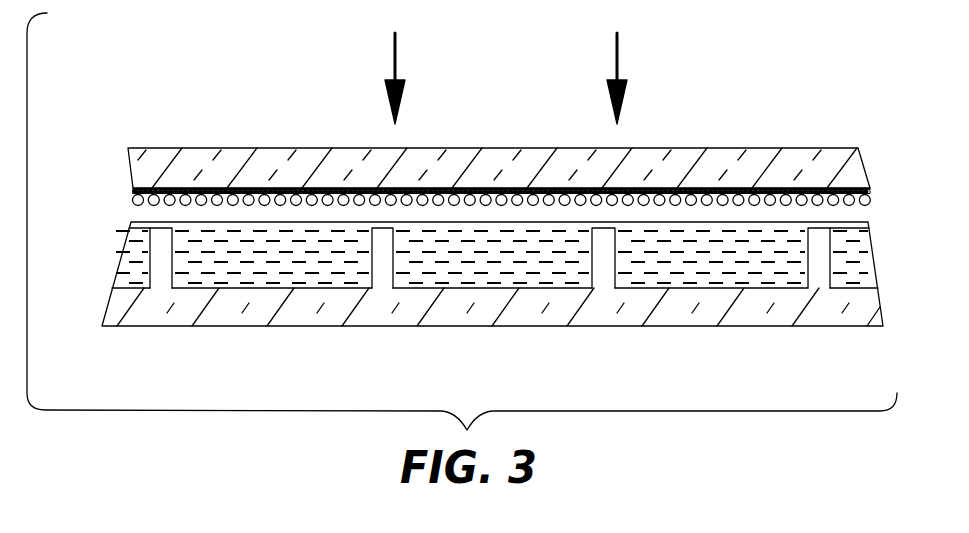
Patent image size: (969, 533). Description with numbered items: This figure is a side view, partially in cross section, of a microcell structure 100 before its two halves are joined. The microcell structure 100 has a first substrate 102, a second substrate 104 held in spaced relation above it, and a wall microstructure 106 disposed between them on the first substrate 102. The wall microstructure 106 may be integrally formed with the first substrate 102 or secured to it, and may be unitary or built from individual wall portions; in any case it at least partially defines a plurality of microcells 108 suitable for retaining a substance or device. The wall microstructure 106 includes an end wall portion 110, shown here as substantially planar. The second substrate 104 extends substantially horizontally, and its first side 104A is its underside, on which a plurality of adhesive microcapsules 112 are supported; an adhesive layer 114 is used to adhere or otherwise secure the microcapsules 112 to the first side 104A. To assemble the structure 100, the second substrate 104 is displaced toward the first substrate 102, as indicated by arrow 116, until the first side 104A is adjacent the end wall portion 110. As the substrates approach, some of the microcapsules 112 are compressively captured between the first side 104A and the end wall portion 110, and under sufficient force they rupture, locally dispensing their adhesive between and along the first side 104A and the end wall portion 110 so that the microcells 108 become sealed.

The microcell structure 100 is at (203, 113).
The first substrate 102 is at (140, 328).
The second substrate 104 is at (150, 147).
The first side 104A is at (292, 190).
The wall microstructure 106 is at (383, 252).
The microcells 108 is at (665, 272).
The end wall portion 110 is at (160, 247).
The adhesive microcapsules 112 is at (156, 209).
The adhesive layer 114 is at (133, 190).
The arrow 116 is at (398, 63).